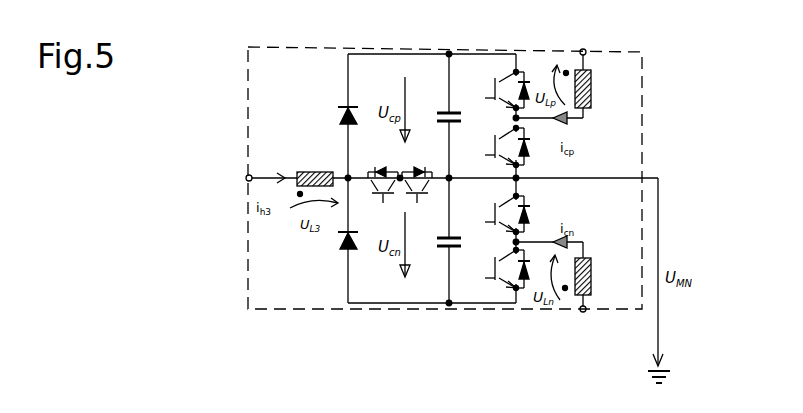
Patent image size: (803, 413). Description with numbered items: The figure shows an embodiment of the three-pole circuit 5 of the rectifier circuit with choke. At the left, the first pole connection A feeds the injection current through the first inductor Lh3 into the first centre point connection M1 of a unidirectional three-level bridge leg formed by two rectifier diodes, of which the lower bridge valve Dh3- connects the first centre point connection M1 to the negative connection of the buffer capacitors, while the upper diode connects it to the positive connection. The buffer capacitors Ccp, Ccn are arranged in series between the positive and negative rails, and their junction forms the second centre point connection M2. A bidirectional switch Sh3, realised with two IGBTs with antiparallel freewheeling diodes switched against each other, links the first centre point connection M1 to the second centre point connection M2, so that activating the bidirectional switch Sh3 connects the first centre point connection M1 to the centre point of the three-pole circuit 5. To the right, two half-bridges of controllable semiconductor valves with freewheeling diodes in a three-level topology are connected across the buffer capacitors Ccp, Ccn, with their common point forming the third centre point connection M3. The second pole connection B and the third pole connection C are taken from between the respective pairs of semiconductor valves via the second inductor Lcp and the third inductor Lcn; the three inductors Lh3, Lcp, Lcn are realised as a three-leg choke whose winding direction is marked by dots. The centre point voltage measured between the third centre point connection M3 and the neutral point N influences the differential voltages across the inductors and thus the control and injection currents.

The three-pole circuit 5 is at (247, 118).
The first pole connection A is at (247, 179).
The second pole connection B is at (585, 50).
The third pole connection C is at (585, 312).
The neutral point N is at (666, 384).
The first centre point connection M1 is at (356, 170).
The second centre point connection M2 is at (458, 173).
The third centre point connection M3 is at (529, 173).
The first inductor Lh3 is at (315, 167).
The bridge valve Dh3- is at (329, 248).
The bidirectional switch Sh3 is at (400, 177).
The buffer capacitor Ccp is at (441, 108).
The buffer capacitor Ccn is at (440, 232).
The second inductor Lcp is at (596, 89).
The third inductor Lcn is at (596, 276).